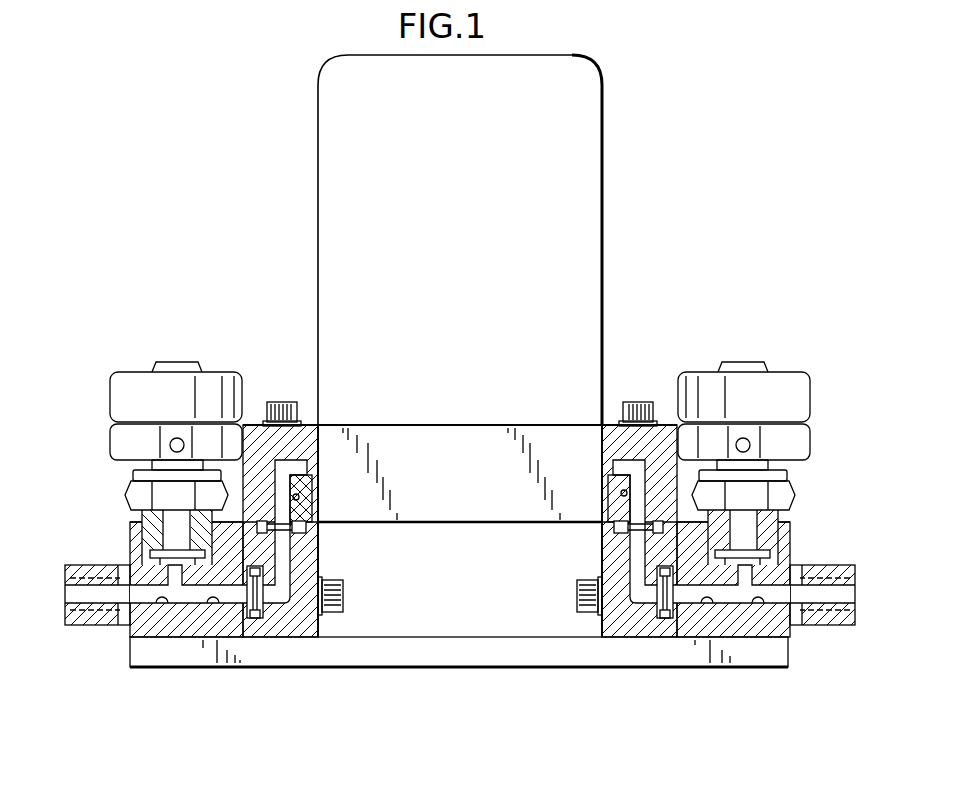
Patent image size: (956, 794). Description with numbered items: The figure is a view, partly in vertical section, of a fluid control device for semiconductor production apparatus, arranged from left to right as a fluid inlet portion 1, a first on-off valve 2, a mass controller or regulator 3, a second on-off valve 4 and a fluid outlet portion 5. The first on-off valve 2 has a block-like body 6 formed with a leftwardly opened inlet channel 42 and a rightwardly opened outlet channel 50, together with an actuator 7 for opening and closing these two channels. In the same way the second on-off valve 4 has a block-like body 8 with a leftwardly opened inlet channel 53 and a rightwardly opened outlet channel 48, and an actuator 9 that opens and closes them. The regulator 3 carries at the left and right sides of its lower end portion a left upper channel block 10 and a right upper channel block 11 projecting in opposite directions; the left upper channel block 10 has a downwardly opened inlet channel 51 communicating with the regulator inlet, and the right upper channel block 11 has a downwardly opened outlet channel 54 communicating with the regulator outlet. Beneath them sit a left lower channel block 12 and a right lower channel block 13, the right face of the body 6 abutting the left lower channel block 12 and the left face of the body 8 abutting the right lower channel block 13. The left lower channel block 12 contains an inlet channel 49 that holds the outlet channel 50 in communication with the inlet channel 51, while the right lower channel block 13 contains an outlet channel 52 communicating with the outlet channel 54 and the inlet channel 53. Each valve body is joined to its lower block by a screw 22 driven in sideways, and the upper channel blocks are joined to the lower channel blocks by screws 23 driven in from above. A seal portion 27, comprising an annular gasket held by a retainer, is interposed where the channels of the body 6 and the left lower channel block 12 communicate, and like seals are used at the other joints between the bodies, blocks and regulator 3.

The fluid inlet portion 1 is at (95, 625).
The first on-off valve 2 is at (212, 390).
The mass controller (regulator) 3 is at (583, 213).
The second on-off valve 4 is at (775, 390).
The fluid outlet portion 5 is at (833, 625).
The block-like body 6 is at (140, 548).
The actuator 7 is at (118, 447).
The block-like body 8 is at (780, 540).
The actuator 9 is at (793, 447).
The left upper channel block 10 is at (259, 445).
The right upper channel block 11 is at (663, 427).
The left lower channel block 12 is at (297, 627).
The right lower channel block 13 is at (617, 625).
The screw 22 is at (343, 592).
The screw 23 is at (292, 400).
The seal portion 27 is at (262, 587).
The inlet channel 42 is at (153, 612).
The outlet channel 48 is at (767, 610).
The inlet channel 49 is at (283, 620).
The outlet channel 50 is at (213, 625).
The inlet channel 51 is at (299, 498).
The outlet channel 52 is at (632, 620).
The inlet channel 53 is at (705, 610).
The outlet channel 54 is at (621, 492).